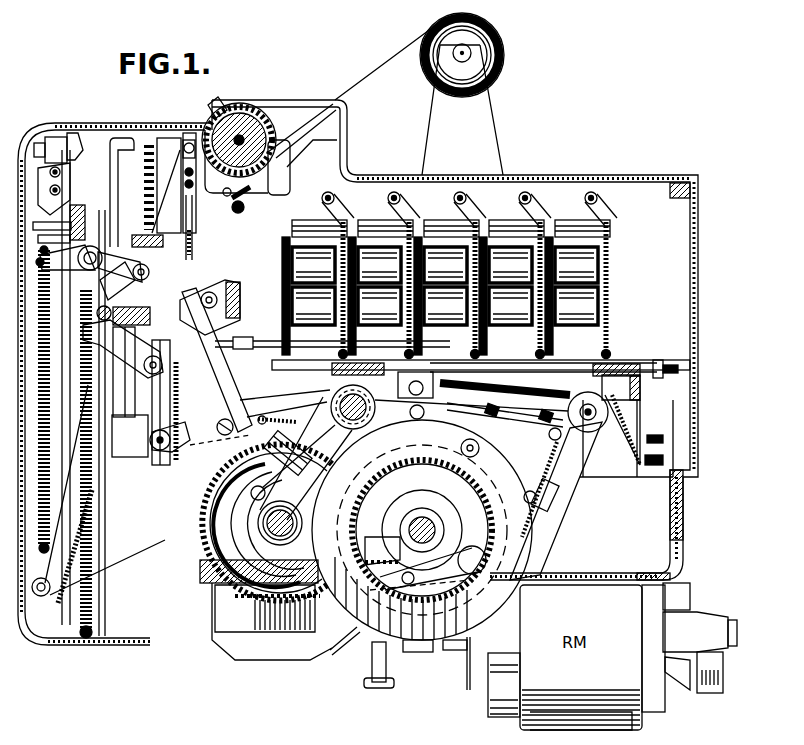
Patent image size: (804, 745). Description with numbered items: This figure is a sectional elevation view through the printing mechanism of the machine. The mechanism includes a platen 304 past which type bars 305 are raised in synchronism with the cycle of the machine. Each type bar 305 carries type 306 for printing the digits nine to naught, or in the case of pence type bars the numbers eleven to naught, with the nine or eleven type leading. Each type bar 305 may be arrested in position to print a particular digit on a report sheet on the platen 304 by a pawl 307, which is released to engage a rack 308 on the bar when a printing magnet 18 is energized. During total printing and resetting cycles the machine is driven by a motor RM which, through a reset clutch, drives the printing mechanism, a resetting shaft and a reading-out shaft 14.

The reading-out shaft 14 is at (272, 532).
The printing magnet 18 is at (574, 264).
The platen 304 is at (243, 105).
The type bar 305 is at (170, 148).
The type 306 is at (194, 217).
The pawl 307 is at (213, 376).
The rack 308 is at (187, 398).